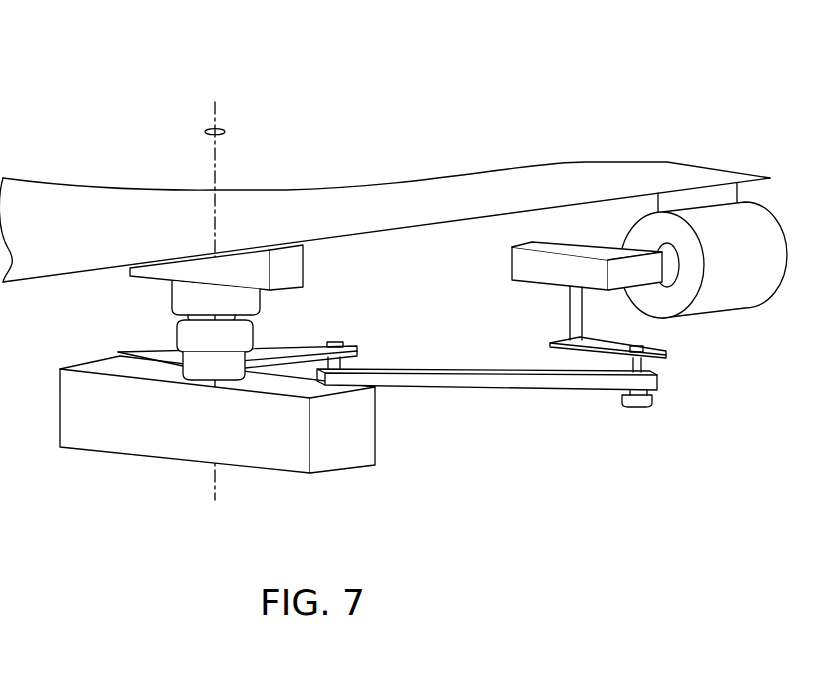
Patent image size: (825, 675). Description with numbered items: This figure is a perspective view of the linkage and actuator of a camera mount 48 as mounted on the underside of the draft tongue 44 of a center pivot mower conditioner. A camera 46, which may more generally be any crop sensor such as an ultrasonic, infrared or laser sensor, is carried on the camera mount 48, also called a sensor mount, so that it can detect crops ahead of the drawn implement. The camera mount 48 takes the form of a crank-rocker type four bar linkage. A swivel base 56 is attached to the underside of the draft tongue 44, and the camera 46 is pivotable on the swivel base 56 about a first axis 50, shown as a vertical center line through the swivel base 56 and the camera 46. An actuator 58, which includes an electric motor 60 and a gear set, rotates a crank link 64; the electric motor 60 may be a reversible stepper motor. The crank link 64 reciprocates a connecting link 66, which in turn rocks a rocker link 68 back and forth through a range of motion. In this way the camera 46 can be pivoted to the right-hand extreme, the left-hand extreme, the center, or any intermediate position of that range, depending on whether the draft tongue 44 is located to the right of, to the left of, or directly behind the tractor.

The draft tongue 44 is at (30, 203).
The camera 46 is at (258, 448).
The camera mount 48 is at (451, 326).
The first axis 50 is at (225, 132).
The swivel base 56 is at (190, 270).
The actuator 58 is at (718, 228).
The electric motor 60 is at (703, 250).
The crank link 64 is at (612, 345).
The connecting link 66 is at (510, 380).
The rocker link 68 is at (305, 345).